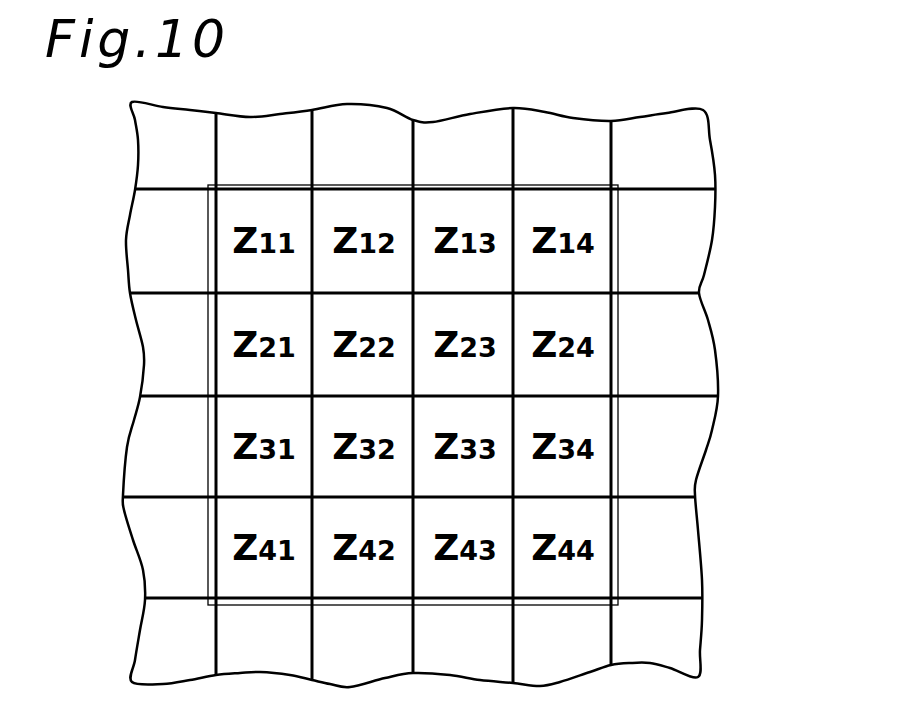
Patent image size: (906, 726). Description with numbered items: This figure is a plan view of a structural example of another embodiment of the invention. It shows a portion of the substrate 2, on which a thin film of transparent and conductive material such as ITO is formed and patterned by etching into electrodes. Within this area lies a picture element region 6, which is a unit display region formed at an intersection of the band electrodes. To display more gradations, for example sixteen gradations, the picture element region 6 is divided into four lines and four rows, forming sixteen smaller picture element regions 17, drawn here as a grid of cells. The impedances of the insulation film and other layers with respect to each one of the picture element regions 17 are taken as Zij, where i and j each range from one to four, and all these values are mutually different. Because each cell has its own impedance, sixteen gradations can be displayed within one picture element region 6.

The substrate 2 is at (735, 198).
The picture element region 6 is at (618, 277).
The picture element regions 17 is at (287, 208).